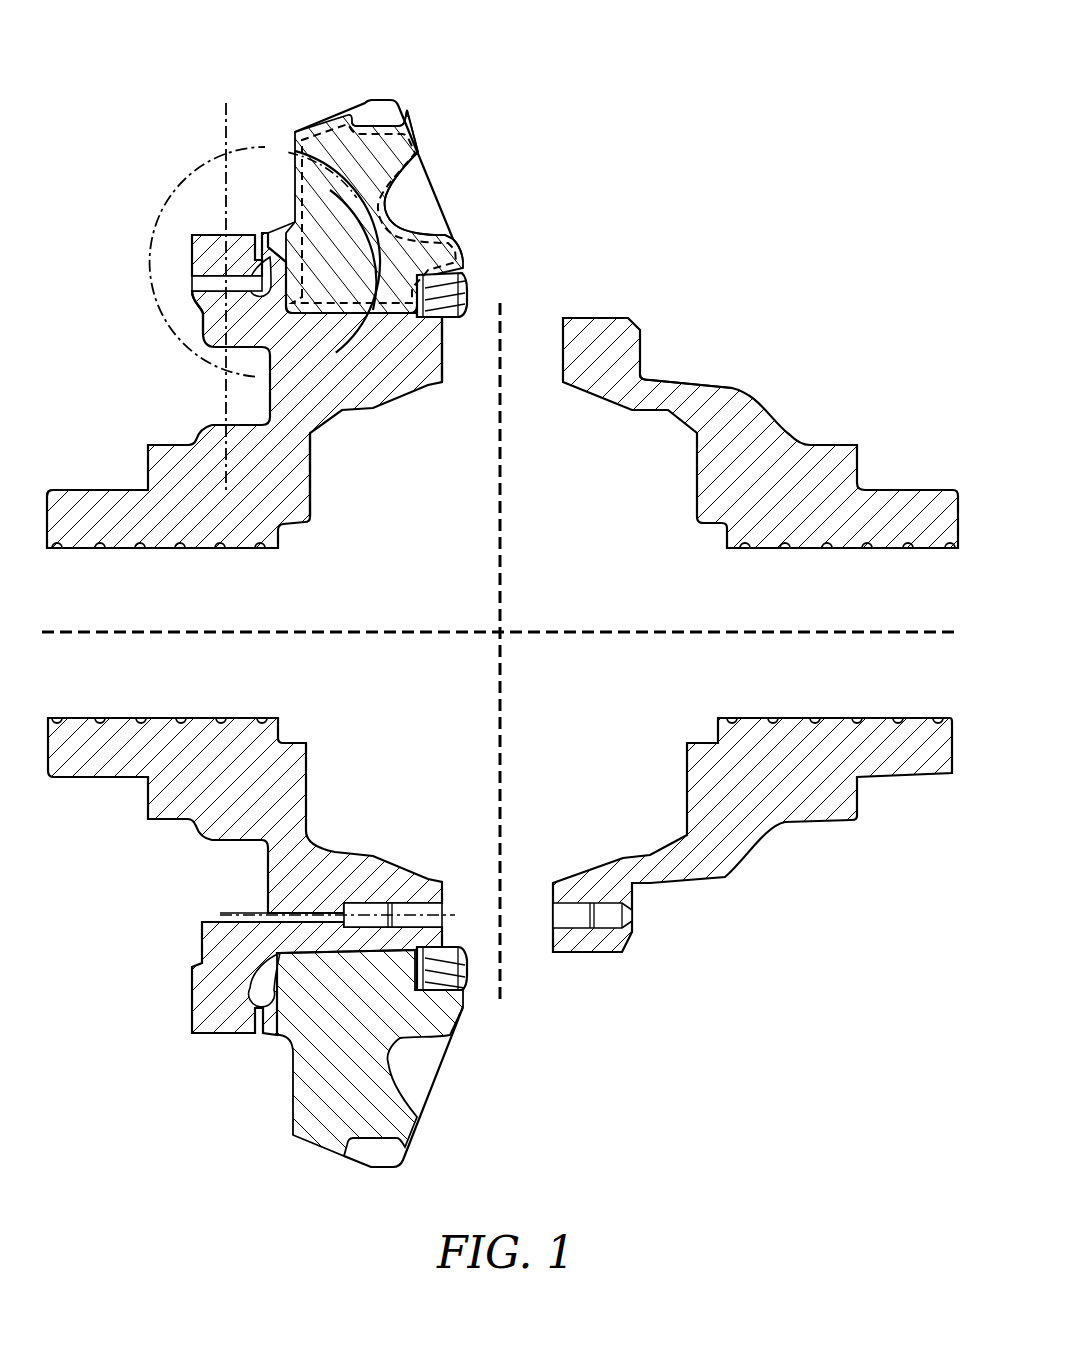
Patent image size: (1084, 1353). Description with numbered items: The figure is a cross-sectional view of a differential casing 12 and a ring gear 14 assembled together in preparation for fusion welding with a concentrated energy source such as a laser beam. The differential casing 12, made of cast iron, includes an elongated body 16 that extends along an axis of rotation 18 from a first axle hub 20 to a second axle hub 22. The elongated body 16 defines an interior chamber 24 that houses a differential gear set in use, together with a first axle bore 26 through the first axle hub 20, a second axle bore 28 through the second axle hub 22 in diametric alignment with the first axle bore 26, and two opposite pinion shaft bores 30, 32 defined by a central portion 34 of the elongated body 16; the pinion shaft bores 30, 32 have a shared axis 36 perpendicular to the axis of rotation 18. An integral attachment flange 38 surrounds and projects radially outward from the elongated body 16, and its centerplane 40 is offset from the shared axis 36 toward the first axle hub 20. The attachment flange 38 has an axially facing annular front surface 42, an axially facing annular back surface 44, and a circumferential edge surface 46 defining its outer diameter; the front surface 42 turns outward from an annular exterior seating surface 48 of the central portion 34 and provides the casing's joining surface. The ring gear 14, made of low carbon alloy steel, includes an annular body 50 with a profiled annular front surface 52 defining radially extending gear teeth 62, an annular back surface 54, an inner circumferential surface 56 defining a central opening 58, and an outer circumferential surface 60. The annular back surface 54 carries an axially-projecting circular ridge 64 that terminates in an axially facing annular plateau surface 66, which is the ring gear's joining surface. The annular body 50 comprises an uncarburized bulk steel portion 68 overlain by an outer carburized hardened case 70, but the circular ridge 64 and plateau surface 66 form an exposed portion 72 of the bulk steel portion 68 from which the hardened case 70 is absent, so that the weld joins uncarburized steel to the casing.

The differential casing 12 is at (206, 422).
The ring gear 14 is at (323, 104).
The elongated body 16 is at (777, 420).
The axis of rotation 18 is at (407, 630).
The first axle hub 20 is at (107, 497).
The second axle hub 22 is at (888, 500).
The interior chamber 24 is at (312, 473).
The first axle bore 26 is at (158, 550).
The second axle bore 28 is at (847, 550).
The pinion shaft bore 30 is at (443, 358).
The pinion shaft bore 32 is at (443, 880).
The central portion 34 is at (677, 390).
The shared axis 36 is at (502, 505).
The attachment flange 38 is at (194, 318).
The centerplane 40 is at (222, 142).
The axially facing annular front surface 42 is at (273, 243).
The axially facing annular back surface 44 is at (255, 252).
The circumferential edge surface 46 is at (212, 235).
The annular exterior seating surface 48 is at (333, 307).
The annular body 50 is at (428, 262).
The profiled annular front surface 52 is at (388, 205).
The annular back surface 54 is at (287, 163).
The inner circumferential surface 56 is at (375, 312).
The central opening 58 is at (375, 315).
The outer circumferential surface 60 is at (368, 150).
The gear teeth 62 is at (395, 142).
The axially-projecting circular ridge 64 is at (268, 262).
The axially facing annular plateau surface 66 is at (272, 262).
The uncarburized bulk steel portion 68 is at (400, 128).
The outer carburized hardened case 70 is at (410, 160).
The exposed portion 72 is at (274, 226).